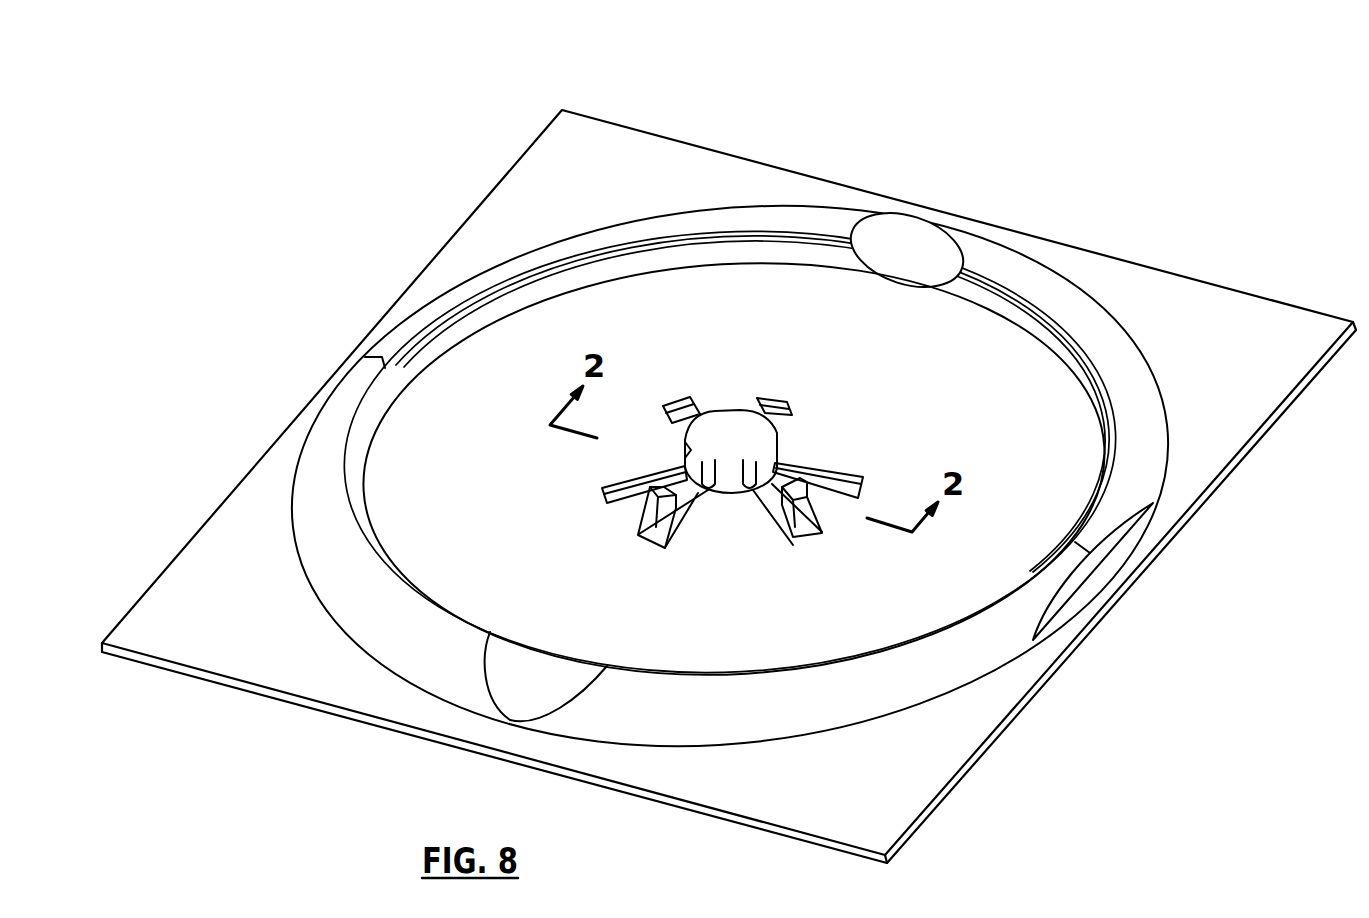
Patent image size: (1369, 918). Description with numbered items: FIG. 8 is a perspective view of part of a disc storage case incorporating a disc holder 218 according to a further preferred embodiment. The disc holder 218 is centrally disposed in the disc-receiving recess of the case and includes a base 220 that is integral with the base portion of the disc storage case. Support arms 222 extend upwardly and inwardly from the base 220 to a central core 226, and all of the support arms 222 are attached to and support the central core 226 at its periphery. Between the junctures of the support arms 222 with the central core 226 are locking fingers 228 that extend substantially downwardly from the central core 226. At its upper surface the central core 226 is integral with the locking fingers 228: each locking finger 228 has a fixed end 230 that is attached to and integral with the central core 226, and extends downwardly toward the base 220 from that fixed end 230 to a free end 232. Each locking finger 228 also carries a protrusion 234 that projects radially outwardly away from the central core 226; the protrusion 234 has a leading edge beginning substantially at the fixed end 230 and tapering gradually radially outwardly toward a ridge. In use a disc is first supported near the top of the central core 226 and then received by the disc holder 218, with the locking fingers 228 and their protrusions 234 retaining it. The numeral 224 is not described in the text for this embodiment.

The disc holder 218 is at (787, 322).
The base 220 is at (981, 375).
The support arms 222 is at (732, 530).
The left arm 224 is at (608, 512).
The central core 226 is at (730, 433).
The locking fingers 228 is at (795, 462).
The fixed end 230 is at (792, 420).
The free end 232 is at (692, 492).
The protrusion 234 is at (685, 468).